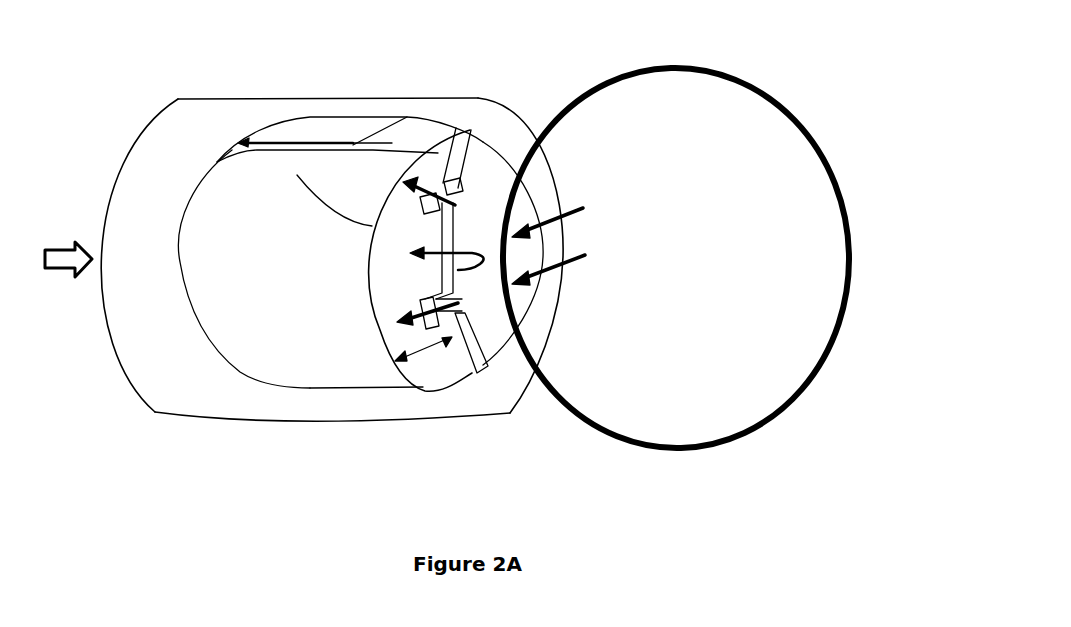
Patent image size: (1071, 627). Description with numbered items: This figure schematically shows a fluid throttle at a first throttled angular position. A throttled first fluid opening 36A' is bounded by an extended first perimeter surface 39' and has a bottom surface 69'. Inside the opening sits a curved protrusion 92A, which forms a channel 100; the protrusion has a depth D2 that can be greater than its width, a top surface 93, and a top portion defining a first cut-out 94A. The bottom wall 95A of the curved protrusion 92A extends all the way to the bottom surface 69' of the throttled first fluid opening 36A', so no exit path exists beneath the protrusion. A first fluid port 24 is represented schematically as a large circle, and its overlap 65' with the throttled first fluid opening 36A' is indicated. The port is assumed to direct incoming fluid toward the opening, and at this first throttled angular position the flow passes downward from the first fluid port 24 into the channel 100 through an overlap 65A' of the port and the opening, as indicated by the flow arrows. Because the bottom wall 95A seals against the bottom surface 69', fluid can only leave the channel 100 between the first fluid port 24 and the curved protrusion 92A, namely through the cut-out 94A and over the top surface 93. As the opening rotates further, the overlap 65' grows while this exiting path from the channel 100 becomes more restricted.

The first fluid port 24 is at (787, 118).
The bottom wall 95A is at (297, 175).
The first perimeter surface 39' is at (364, 91).
The first cut-out 94A is at (440, 160).
The top surface 93 is at (440, 143).
The overlap 65' is at (569, 187).
The overlap 65A' is at (590, 300).
The bottom surface 69' is at (305, 288).
The throttled first fluid opening 36A' is at (353, 441).
The depth of the curved protrusion D2 is at (430, 345).
The curved protrusion 92A is at (448, 357).
The channel 100 is at (495, 333).